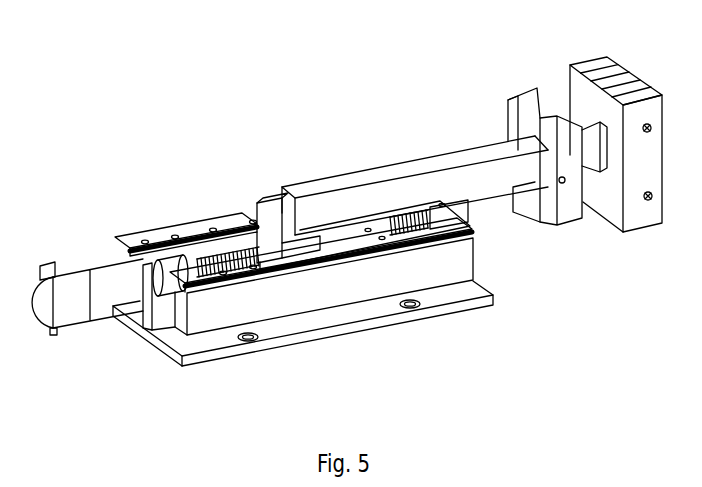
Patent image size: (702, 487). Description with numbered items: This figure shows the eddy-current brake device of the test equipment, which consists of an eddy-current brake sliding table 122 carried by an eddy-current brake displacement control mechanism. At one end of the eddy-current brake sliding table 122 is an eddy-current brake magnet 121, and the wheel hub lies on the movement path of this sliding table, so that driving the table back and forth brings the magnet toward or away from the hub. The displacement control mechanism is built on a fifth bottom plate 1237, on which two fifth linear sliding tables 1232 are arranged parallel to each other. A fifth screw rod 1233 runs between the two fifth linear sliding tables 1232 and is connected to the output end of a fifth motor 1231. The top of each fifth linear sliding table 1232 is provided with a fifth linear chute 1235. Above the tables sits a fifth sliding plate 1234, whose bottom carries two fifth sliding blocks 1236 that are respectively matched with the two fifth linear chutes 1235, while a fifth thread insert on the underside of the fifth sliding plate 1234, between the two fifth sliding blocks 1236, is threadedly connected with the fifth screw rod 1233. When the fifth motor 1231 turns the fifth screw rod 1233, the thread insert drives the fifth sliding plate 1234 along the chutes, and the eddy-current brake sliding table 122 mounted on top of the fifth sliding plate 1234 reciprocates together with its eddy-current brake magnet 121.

The eddy-current brake magnet 121 is at (595, 112).
The eddy-current brake sliding table 122 is at (482, 180).
The fifth motor 1231 is at (90, 294).
The fifth linear sliding table 1232 is at (212, 307).
The fifth screw rod 1233 is at (165, 246).
The fifth sliding plate 1234 is at (363, 240).
The fifth linear chute 1235 is at (218, 224).
The fifth sliding block 1236 is at (262, 220).
The fifth bottom plate 1237 is at (352, 320).